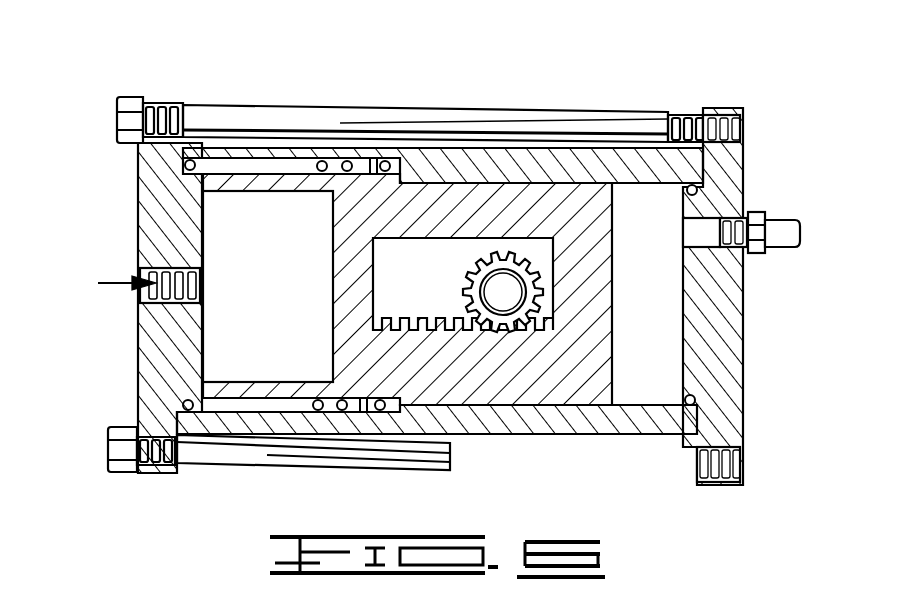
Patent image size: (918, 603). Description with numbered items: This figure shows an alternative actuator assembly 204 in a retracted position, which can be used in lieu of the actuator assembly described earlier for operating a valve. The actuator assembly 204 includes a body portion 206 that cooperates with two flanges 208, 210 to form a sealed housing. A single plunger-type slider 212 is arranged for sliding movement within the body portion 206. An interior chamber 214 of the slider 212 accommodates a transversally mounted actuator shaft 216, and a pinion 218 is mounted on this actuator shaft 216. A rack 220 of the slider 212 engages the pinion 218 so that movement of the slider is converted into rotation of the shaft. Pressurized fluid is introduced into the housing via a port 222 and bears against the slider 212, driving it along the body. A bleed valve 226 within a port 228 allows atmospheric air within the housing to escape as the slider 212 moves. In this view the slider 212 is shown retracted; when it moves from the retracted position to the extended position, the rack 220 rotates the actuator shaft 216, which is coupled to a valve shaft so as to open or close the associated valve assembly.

The actuator assembly 204 is at (311, 93).
The body portion 206 is at (552, 428).
The flange 208 is at (160, 346).
The flange 210 is at (732, 390).
The slider 212 is at (529, 196).
The interior chamber 214 is at (412, 260).
The actuator shaft 216 is at (503, 290).
The pinion 218 is at (470, 273).
The rack 220 is at (398, 320).
The port 222 is at (137, 266).
The bleed valve 226 is at (770, 223).
The port 228 is at (703, 220).